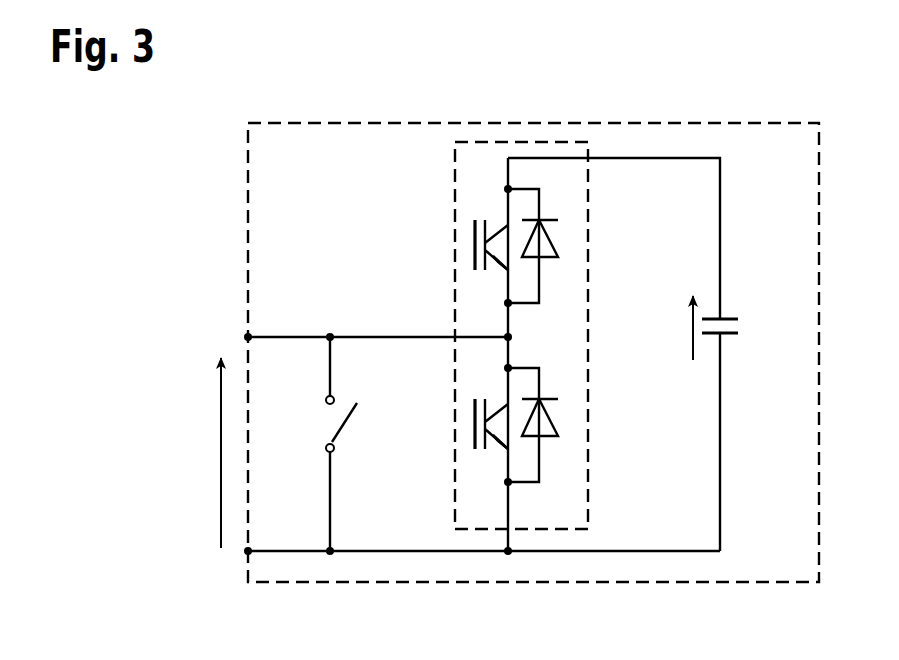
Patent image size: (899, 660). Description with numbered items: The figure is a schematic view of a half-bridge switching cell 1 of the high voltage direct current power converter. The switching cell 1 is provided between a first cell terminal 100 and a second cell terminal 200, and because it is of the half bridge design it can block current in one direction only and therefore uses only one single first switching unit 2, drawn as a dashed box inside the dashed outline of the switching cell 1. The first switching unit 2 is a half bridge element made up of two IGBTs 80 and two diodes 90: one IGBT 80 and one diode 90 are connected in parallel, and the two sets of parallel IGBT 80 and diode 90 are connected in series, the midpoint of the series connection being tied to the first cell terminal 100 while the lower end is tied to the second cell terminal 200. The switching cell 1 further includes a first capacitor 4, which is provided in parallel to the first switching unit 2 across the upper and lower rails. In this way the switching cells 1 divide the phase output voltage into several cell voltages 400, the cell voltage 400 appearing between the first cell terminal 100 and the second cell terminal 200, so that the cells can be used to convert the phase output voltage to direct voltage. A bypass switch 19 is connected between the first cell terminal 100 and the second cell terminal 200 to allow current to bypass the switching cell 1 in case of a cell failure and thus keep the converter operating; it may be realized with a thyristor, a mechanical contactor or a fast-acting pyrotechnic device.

The switching cell 1 is at (194, 120).
The first switching unit 2 is at (481, 141).
The first capacitor 4 is at (733, 308).
The bypass switch 19 is at (325, 418).
The IGBT 80 is at (499, 232).
The diode 90 is at (552, 245).
The first cell terminal 100 is at (248, 337).
The second cell terminal 200 is at (248, 552).
The cell voltage 400 is at (221, 447).